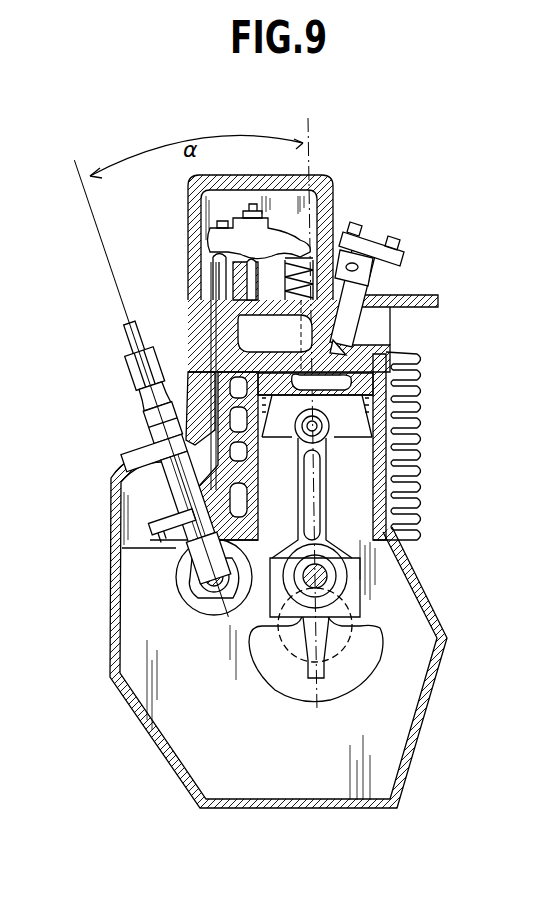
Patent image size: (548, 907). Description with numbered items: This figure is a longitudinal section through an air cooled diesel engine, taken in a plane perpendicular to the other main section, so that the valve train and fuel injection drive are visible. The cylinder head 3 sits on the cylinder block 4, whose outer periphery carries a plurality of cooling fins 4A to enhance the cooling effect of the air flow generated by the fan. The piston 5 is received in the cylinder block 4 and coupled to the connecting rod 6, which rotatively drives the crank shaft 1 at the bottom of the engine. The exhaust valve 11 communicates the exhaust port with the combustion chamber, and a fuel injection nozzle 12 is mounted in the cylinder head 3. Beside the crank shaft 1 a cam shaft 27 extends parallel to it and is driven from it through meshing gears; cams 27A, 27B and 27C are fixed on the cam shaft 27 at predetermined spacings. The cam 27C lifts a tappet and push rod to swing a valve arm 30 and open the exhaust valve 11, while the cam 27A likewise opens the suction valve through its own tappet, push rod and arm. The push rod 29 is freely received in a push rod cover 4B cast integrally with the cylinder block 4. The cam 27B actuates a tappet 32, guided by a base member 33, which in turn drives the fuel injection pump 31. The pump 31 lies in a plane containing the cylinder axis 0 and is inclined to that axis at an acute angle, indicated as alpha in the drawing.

The axis of the cylinder 0 is at (312, 143).
The crank shaft 1 is at (347, 652).
The cylinder head 3 is at (391, 349).
The cylinder block 4 is at (410, 478).
The cooling fins 4A is at (408, 436).
The push rod cover 4B is at (208, 396).
The piston 5 is at (400, 388).
The connecting rod 6 is at (332, 496).
The exhaust valve 11 is at (296, 331).
The fuel injection nozzle 12 is at (372, 290).
The cam shaft 27 is at (250, 573).
The cam 27A is at (234, 566).
The cam 27B is at (224, 578).
The cam 27C is at (242, 600).
The push rod 29 is at (208, 406).
The valve arm 30 is at (232, 243).
The fuel injection pump 31 is at (140, 378).
The tappet 32 is at (200, 517).
The base member 33 is at (228, 541).